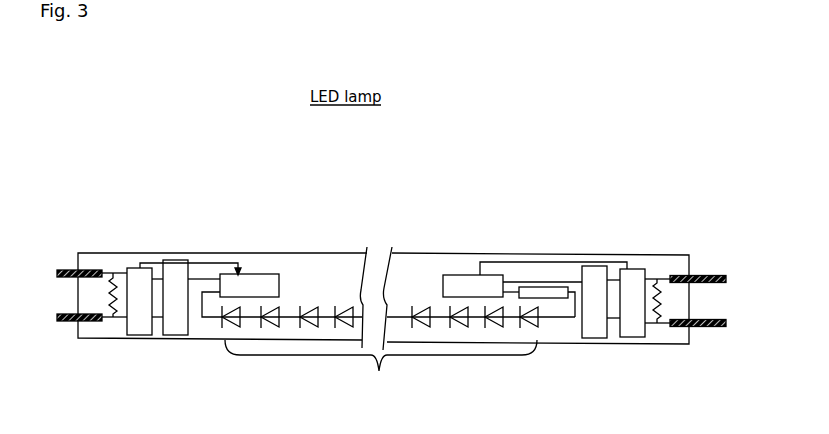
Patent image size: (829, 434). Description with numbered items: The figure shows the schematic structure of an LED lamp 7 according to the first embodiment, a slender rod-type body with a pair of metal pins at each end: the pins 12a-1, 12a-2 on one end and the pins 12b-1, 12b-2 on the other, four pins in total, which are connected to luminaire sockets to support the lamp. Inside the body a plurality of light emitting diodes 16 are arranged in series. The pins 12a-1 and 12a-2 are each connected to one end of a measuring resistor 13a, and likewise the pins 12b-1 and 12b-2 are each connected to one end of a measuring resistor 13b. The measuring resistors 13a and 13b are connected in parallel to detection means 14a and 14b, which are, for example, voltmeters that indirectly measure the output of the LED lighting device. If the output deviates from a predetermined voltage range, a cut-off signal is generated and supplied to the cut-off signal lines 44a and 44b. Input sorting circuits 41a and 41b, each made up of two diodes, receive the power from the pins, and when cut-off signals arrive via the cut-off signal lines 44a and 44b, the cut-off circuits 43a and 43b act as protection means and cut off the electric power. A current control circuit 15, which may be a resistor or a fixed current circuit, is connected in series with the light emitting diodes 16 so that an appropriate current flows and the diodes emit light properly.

The LED lamp 7 is at (556, 120).
The pin 12a-1 is at (70, 321).
The pin 12a-2 is at (68, 269).
The pin 12b-1 is at (705, 276).
The pin 12b-2 is at (710, 327).
The measuring resistor 13a is at (115, 276).
The measuring resistor 13b is at (661, 282).
The detection means 14a is at (143, 335).
The detection means 14b is at (632, 338).
The input sorting circuit 41a is at (175, 260).
The input sorting circuit 41b is at (597, 266).
The cut-off circuit 43a is at (252, 271).
The cut-off circuit 43b is at (464, 272).
The cut-off signal line 44a is at (212, 263).
The cut-off signal line 44b is at (522, 262).
The current control circuit 15 is at (543, 287).
The light emitting diodes 16 is at (388, 344).